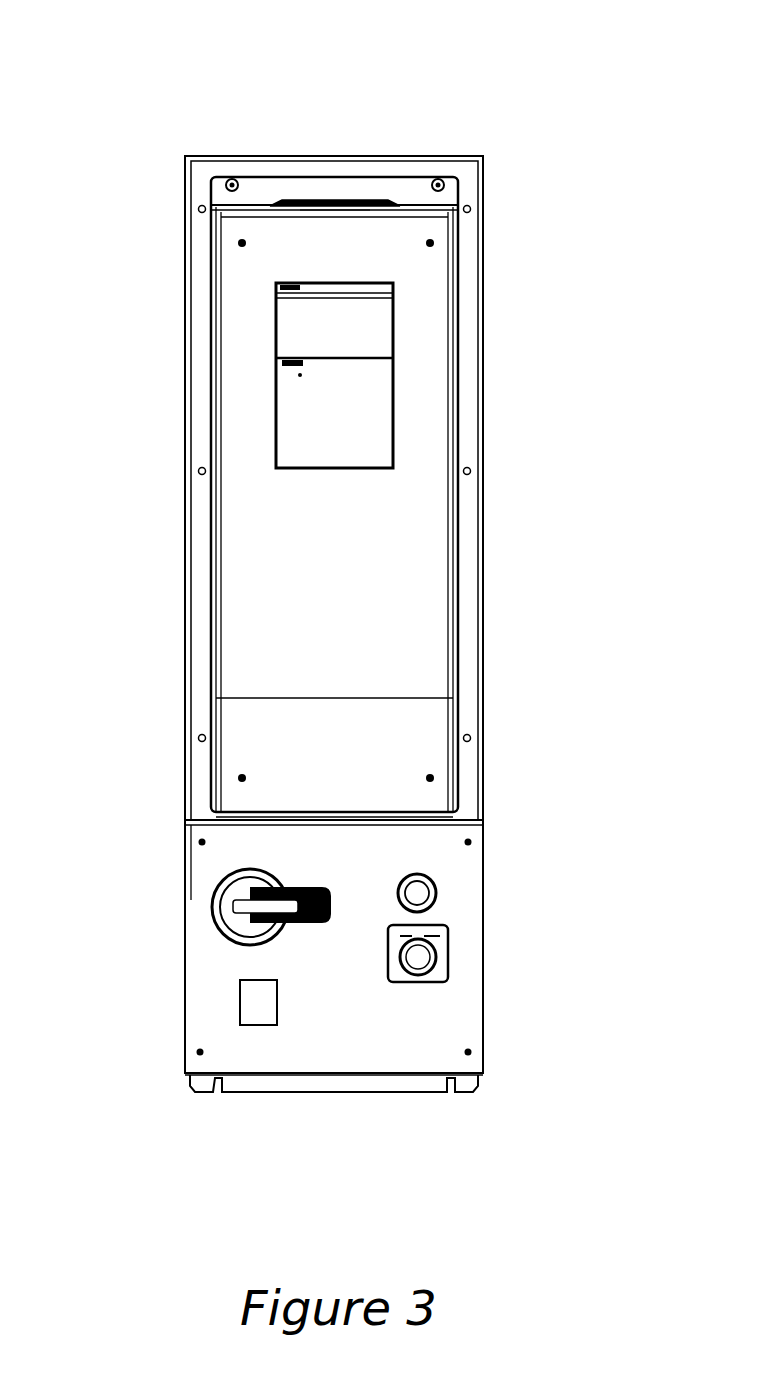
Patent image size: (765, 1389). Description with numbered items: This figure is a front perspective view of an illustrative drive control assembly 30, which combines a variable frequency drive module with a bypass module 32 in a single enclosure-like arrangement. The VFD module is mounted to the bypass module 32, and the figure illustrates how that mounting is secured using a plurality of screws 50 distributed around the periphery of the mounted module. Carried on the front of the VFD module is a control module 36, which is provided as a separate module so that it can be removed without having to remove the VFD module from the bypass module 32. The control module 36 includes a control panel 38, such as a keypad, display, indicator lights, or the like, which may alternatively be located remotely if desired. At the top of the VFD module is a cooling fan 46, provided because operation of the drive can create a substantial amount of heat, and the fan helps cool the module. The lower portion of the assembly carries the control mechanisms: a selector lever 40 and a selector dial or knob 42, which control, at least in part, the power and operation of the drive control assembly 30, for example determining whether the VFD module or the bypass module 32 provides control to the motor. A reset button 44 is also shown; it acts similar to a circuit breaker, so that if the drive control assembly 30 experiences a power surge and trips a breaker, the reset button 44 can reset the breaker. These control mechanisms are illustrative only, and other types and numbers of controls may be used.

The drive control assembly 30 is at (578, 88).
The bypass module 32 is at (467, 333).
The control module 36 is at (423, 594).
The control panel 38 is at (298, 333).
The selector lever 40 is at (235, 935).
The selector dial or knob 42 is at (445, 955).
The reset button 44 is at (437, 890).
The cooling fan 46 is at (352, 200).
The screws 50 is at (230, 178).